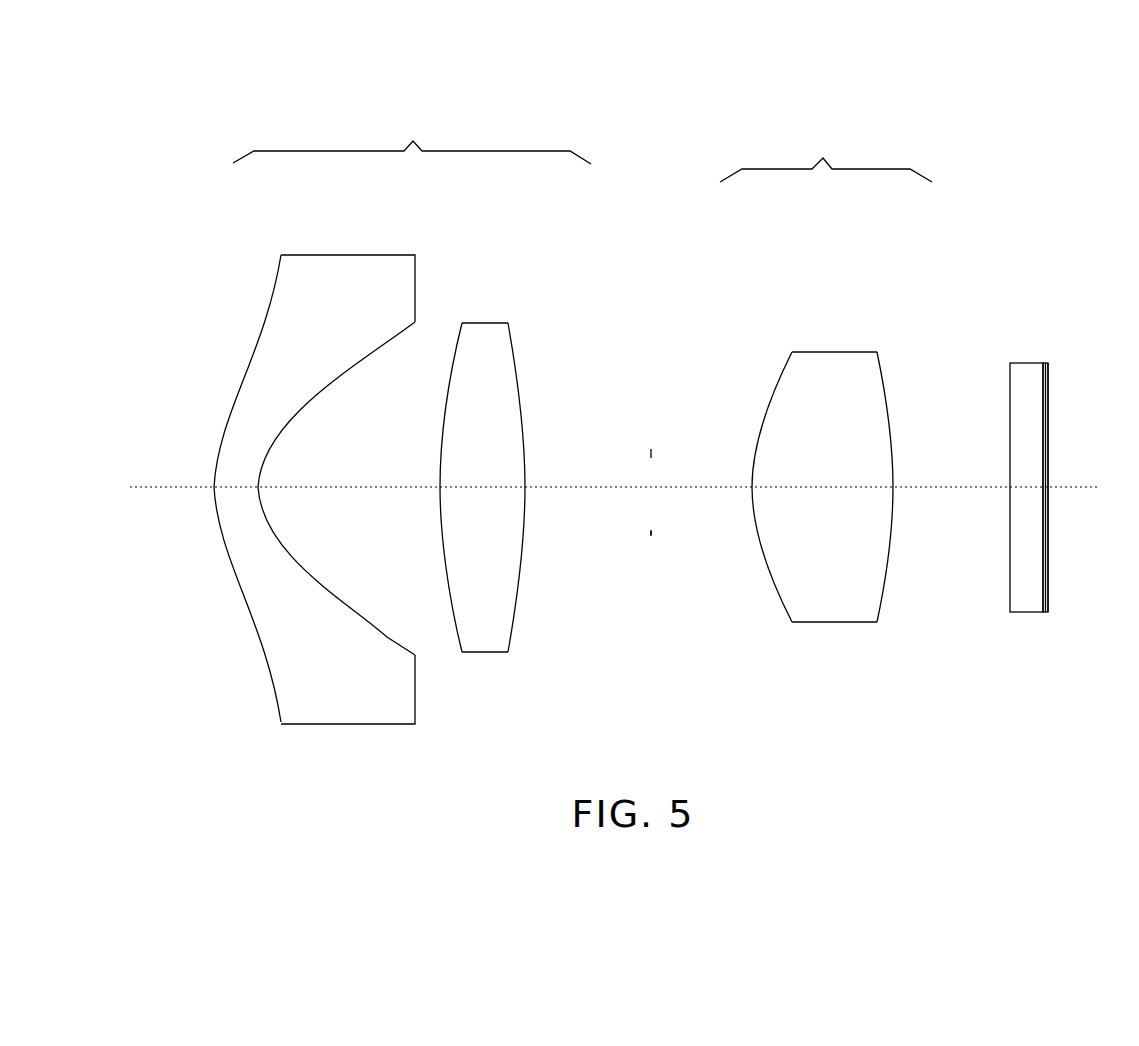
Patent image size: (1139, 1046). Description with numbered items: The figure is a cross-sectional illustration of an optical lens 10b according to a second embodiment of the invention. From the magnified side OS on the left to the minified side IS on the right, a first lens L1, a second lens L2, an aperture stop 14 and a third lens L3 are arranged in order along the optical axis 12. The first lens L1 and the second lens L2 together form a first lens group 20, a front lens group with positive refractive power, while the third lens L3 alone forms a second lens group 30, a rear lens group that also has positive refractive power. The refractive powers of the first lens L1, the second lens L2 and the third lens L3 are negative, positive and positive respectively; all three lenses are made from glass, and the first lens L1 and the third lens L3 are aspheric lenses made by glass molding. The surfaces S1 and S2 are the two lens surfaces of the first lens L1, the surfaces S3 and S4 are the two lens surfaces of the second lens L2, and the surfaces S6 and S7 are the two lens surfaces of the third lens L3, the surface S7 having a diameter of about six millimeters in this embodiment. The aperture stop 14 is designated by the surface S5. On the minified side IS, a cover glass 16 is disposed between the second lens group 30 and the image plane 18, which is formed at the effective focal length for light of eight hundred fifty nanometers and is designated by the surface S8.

The optical lens 10b is at (190, 116).
The optical axis 12 is at (163, 487).
The aperture stop 14 is at (651, 452).
The cover glass 16 is at (1020, 363).
The image plane 18 is at (1048, 367).
The first lens group 20 is at (402, 453).
The second lens group 30 is at (826, 435).
The first lens L1 is at (337, 268).
The second lens L2 is at (483, 333).
The third lens L3 is at (825, 360).
The surface S1 is at (265, 637).
The surface S2 is at (387, 637).
The surface S3 is at (460, 638).
The surface S4 is at (513, 638).
The surface S5 is at (652, 533).
The surface S6 is at (773, 585).
The surface S7 is at (883, 580).
The surface S8 is at (1047, 582).
The magnified side OS is at (225, 308).
The minified side IS is at (937, 310).